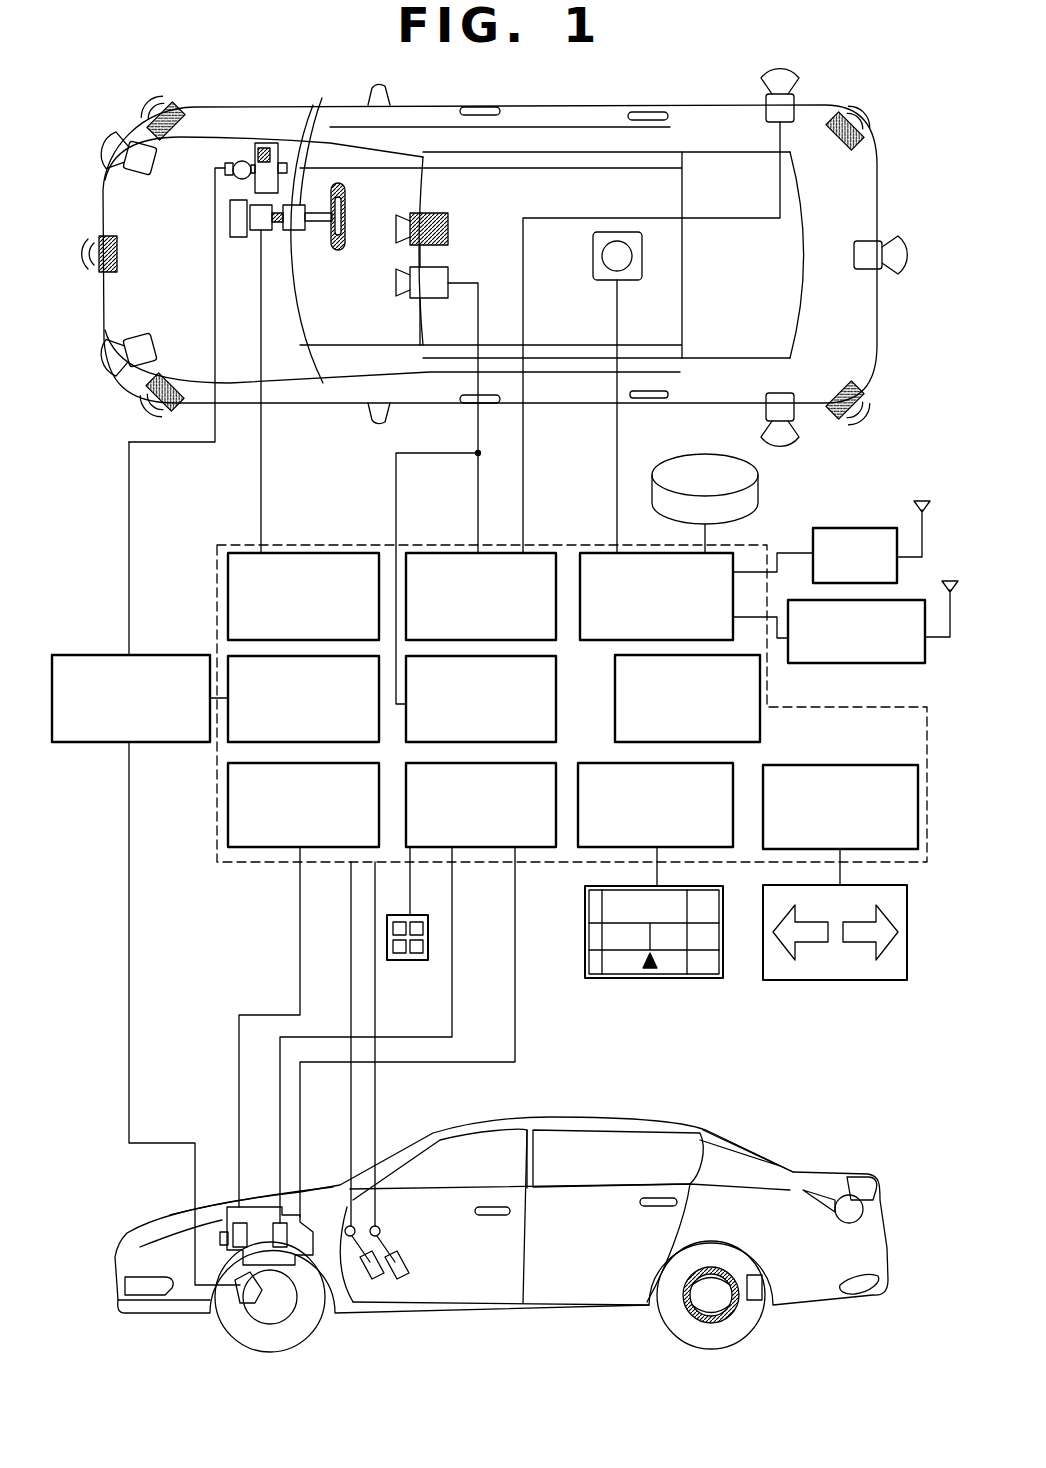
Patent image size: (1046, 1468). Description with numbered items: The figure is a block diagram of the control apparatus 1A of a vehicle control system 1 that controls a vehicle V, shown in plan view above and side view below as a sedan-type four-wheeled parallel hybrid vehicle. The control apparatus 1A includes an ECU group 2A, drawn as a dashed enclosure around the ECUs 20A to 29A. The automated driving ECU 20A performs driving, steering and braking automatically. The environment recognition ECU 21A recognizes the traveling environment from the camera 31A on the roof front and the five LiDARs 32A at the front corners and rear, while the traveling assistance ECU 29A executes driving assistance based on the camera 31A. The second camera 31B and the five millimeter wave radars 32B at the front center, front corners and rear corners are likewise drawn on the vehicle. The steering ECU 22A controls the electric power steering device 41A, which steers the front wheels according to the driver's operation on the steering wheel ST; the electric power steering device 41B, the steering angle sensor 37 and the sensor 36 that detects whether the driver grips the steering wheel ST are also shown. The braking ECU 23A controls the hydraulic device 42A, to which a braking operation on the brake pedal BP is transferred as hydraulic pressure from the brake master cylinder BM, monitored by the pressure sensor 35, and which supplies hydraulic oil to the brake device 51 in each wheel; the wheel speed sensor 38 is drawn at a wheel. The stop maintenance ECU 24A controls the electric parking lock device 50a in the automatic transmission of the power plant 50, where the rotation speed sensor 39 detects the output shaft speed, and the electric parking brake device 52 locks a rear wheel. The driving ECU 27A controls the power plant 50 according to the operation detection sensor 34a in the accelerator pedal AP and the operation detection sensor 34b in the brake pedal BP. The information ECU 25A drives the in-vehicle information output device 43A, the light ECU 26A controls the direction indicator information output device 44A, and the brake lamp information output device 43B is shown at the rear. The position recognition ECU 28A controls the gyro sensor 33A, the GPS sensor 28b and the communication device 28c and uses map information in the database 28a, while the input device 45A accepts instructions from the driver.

The vehicle control system 1 is at (893, 404).
The control apparatus 1A is at (885, 486).
The ECU group 2A is at (347, 544).
The vehicle V is at (893, 155).
The automated driving ECU 20A is at (760, 691).
The environment recognition ECU 21A is at (538, 552).
The steering ECU 22A is at (290, 552).
The braking ECU 23A is at (238, 744).
The stop maintenance ECU 24A is at (268, 862).
The information ECU 25A is at (598, 850).
The light ECU 26A is at (868, 765).
The driving ECU 27A is at (498, 850).
The position recognition ECU 28A is at (738, 550).
The database 28a is at (692, 455).
The GPS sensor 28b is at (850, 526).
The communication device 28c is at (878, 663).
The traveling assistance ECU 29A is at (556, 702).
The camera 31A is at (412, 298).
The camera 31B is at (448, 225).
The LiDAR 32A is at (150, 172).
The millimeter wave radar 32B is at (178, 110).
The gyro sensor 33A is at (605, 280).
The operation detection sensor 34a is at (349, 1226).
The operation detection sensor 34b is at (392, 1230).
The pressure sensor 35 is at (266, 148).
The sensor 36 is at (345, 210).
The steering angle sensor 37 is at (240, 237).
The wheel speed sensor 38 is at (756, 1300).
The rotation speed sensor 39 is at (278, 1222).
The electric power steering device 41A is at (272, 230).
The electric power steering device 41B is at (326, 137).
The hydraulic device 42A is at (98, 654).
The information output device 43A is at (684, 978).
The information output device 43B is at (847, 1195).
The information output device 44A is at (845, 980).
The input device 45A is at (410, 960).
The power plant 50 is at (296, 1320).
The electric parking lock device 50a is at (235, 1207).
The brake device 51 is at (238, 1320).
The electric parking brake device 52 is at (700, 1323).
The accelerator pedal AP is at (378, 1280).
The brake pedal BP is at (403, 1280).
The brake master cylinder BM is at (243, 160).
The steering wheel ST is at (345, 195).